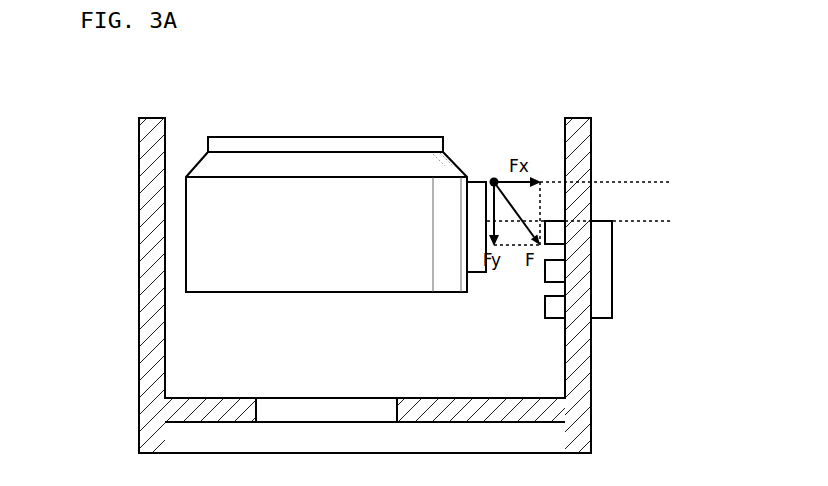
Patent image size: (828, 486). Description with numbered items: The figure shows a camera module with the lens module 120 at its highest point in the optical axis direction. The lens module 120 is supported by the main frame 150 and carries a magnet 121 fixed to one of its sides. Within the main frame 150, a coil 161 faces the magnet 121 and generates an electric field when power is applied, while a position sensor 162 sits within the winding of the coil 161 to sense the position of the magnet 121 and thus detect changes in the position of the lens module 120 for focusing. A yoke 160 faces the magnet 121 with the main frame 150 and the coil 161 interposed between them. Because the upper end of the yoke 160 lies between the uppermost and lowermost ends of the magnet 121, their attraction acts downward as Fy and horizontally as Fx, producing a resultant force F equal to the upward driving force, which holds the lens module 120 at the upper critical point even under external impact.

The lens module 120 is at (200, 274).
The magnet 121 is at (478, 190).
The main frame 150 is at (158, 328).
The yoke 160 is at (604, 226).
The coil 161 is at (557, 235).
The position sensor 162 is at (557, 273).